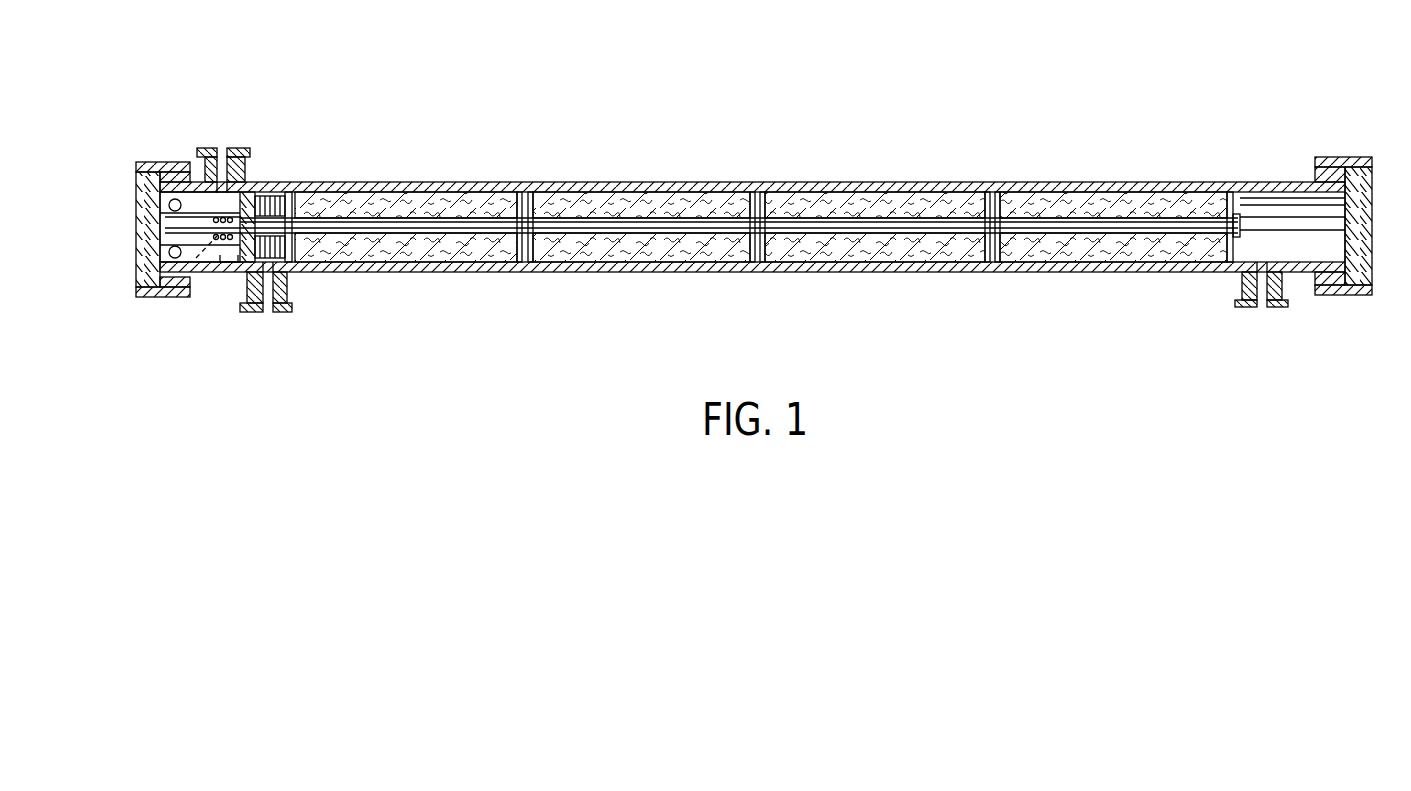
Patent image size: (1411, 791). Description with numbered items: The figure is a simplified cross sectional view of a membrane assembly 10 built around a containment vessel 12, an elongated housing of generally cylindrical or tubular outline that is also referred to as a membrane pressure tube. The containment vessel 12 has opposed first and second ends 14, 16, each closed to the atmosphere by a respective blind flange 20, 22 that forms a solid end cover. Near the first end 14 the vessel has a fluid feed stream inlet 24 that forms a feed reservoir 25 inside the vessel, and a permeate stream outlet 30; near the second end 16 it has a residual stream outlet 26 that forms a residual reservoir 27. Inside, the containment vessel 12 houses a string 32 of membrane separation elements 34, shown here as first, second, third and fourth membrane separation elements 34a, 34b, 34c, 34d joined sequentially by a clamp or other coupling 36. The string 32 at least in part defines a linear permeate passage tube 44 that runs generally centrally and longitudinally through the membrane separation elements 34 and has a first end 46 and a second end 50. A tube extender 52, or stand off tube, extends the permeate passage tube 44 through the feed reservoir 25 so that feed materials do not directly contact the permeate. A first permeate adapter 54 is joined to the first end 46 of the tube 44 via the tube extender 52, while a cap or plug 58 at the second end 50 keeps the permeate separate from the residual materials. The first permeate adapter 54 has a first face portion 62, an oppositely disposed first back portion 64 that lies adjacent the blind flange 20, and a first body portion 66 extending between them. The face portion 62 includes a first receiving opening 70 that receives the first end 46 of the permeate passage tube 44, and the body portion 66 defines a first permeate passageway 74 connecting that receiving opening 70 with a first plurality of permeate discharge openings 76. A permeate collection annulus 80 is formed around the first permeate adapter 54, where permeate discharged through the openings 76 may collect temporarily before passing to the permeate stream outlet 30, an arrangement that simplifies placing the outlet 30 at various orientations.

The membrane assembly 10 is at (1078, 138).
The containment vessel 12 is at (760, 181).
The first end 14 is at (137, 337).
The second end 16 is at (1322, 325).
The blind flange 20 is at (149, 161).
The blind flange 22 is at (1362, 156).
The fluid feed stream inlet 24 is at (274, 318).
The feed reservoir 25 is at (311, 257).
The residual stream outlet 26 is at (1232, 305).
The residual reservoir 27 is at (1287, 216).
The permeate stream outlet 30 is at (236, 147).
The string of membrane separation elements 32 is at (1172, 190).
The membrane separation elements 34 is at (761, 224).
The first membrane separation element 34a is at (397, 250).
The second membrane separation element 34b is at (628, 250).
The third membrane separation element 34c is at (860, 250).
The fourth membrane separation element 34d is at (1092, 250).
The clamp 36 is at (515, 272).
The linear permeate passage tube 44 is at (558, 255).
The first end of permeate passage tube 46 is at (313, 272).
The second end of permeate passage tube 50 is at (1223, 208).
The tube extender 52 is at (285, 288).
The first permeate adapter 54 is at (184, 198).
The cap or plug 58 is at (1241, 216).
The first face portion 62 is at (241, 310).
The first back portion 64 is at (172, 223).
The first body portion 66 is at (205, 158).
The first receiving opening 70 is at (262, 193).
The first permeate passageway 74 is at (185, 297).
The first plurality of permeate discharge openings 76 is at (250, 150).
The permeate collection annulus 80 is at (219, 262).